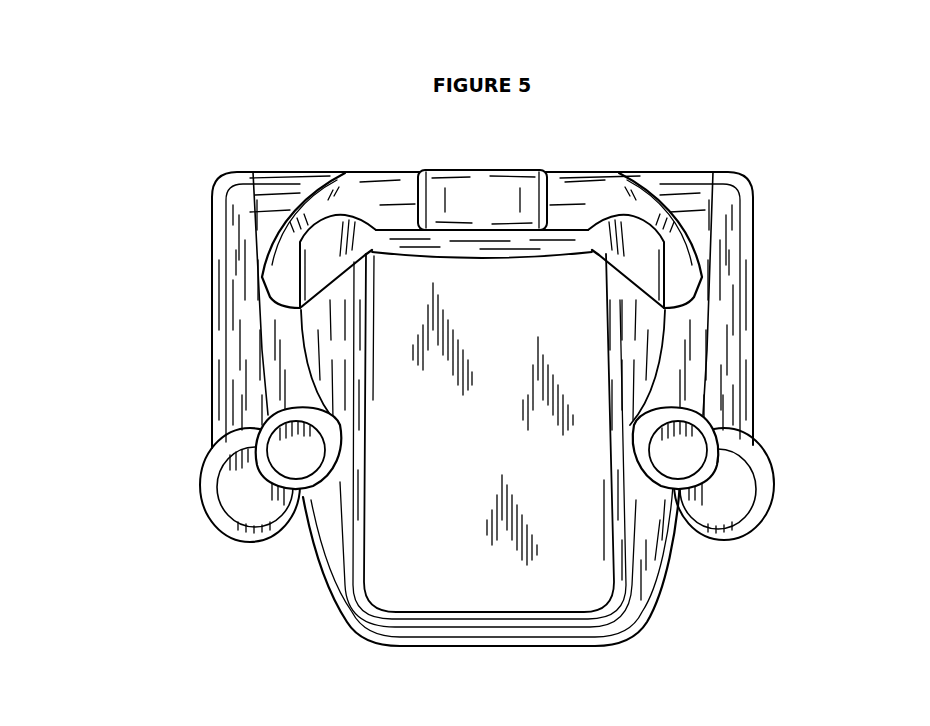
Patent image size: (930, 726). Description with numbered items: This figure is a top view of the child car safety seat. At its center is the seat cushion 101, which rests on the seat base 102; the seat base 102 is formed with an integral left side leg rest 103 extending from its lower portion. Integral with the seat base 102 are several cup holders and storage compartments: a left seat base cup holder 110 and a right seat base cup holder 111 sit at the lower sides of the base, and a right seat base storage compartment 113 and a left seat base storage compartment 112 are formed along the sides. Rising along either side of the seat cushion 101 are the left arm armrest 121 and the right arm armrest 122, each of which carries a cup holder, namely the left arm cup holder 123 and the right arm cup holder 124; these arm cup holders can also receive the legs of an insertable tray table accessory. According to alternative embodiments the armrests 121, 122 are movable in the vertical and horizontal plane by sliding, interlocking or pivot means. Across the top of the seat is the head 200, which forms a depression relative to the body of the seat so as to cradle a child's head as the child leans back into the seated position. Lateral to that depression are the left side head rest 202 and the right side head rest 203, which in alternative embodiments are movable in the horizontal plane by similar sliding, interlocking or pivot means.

The head 200 is at (483, 198).
The left side head rest 202 is at (647, 247).
The right side head rest 203 is at (328, 246).
The left seat base storage compartment 112 is at (726, 274).
The right arm armrest 122 is at (287, 343).
The right seat base storage compartment 113 is at (243, 402).
The left arm armrest 121 is at (687, 352).
The left arm cup holder 123 is at (686, 447).
The right arm cup holder 124 is at (288, 455).
The left seat base cup holder 110 is at (738, 497).
The right seat base cup holder 111 is at (240, 500).
The left side leg rest 103 is at (650, 522).
The seat base 102 is at (354, 617).
The seat cushion 101 is at (577, 565).